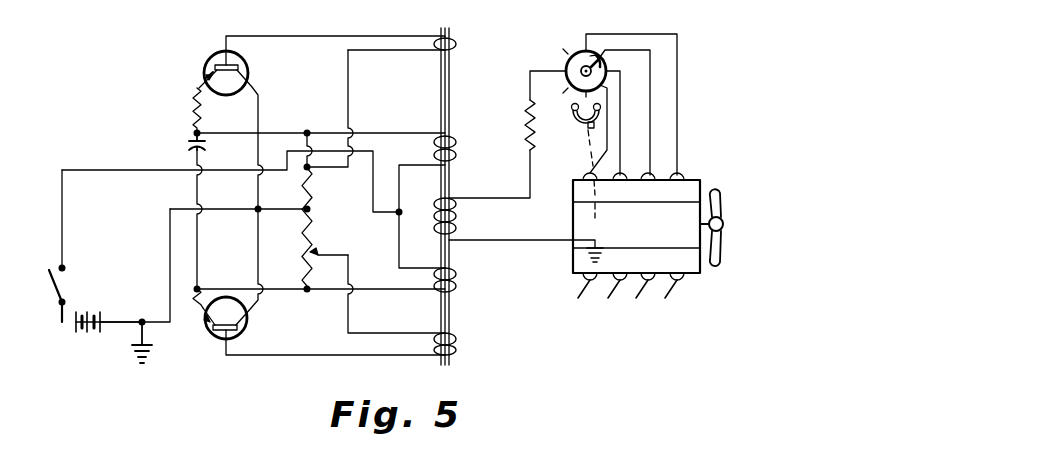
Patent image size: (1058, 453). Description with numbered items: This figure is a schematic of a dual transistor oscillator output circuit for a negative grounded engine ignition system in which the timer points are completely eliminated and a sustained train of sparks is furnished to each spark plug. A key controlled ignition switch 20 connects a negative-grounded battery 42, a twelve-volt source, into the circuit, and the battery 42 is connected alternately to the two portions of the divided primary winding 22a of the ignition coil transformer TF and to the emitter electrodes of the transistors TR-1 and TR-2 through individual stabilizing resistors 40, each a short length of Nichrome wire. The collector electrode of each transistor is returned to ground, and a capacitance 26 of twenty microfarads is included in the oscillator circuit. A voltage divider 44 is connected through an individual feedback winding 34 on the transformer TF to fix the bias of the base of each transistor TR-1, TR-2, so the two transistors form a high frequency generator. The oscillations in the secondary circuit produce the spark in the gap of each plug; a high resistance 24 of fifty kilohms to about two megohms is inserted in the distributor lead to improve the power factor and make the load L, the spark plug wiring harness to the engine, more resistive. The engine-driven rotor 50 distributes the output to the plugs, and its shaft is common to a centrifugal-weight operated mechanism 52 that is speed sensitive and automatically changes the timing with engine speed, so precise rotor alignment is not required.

The ignition switch 20 is at (50, 289).
The battery 42 is at (89, 340).
The first transistor TR-1 is at (212, 57).
The second transistor TR-2 is at (212, 339).
The stabilizing resistor 40 is at (195, 98).
The capacitance 26 is at (186, 141).
The voltage divider 44 is at (313, 251).
The output transformer TF is at (440, 77).
The feedback winding 34 is at (456, 46).
The divided primary winding 22a is at (456, 158).
The high resistance 24 is at (527, 122).
The rotor 50 is at (580, 53).
The centrifugal-weight operated mechanism 52 is at (579, 115).
The load L is at (678, 86).